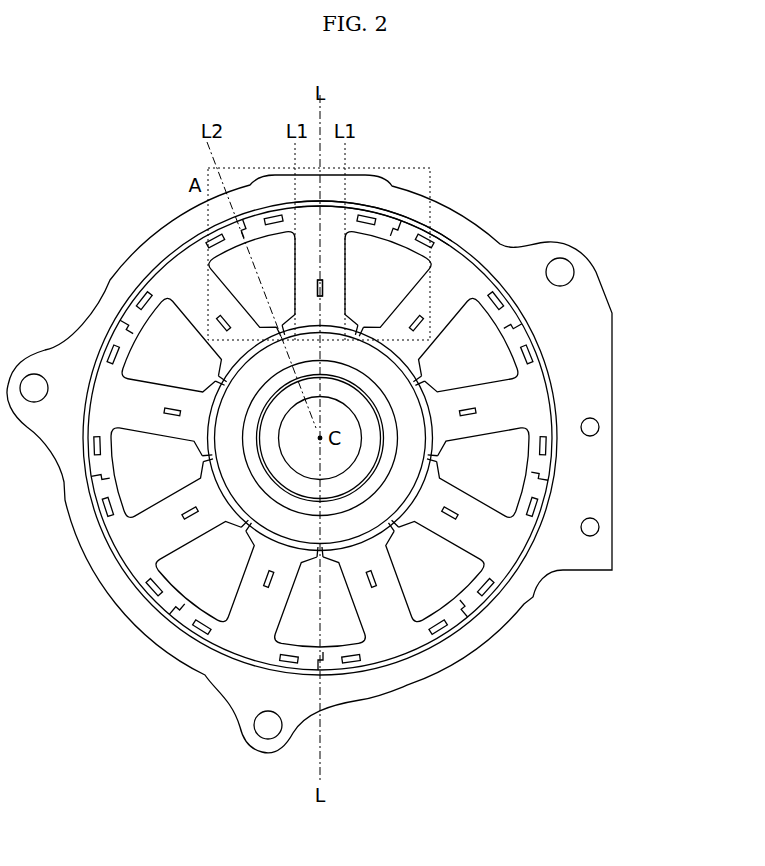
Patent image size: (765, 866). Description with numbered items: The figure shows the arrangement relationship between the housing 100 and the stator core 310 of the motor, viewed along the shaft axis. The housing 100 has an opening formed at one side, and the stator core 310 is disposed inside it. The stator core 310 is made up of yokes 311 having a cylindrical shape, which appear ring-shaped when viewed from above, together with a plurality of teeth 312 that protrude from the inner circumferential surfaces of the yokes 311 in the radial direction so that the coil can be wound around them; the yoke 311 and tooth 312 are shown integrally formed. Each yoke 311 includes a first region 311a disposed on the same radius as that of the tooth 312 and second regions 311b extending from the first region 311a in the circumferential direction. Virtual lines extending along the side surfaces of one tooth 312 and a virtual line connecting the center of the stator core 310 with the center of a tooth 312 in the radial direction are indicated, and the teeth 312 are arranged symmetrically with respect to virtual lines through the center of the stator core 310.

The housing 100 is at (596, 550).
The stator core 310 is at (402, 646).
The yoke 311 is at (390, 191).
The first region 311a is at (331, 222).
The second region 311b is at (388, 214).
The tooth 312 is at (440, 305).